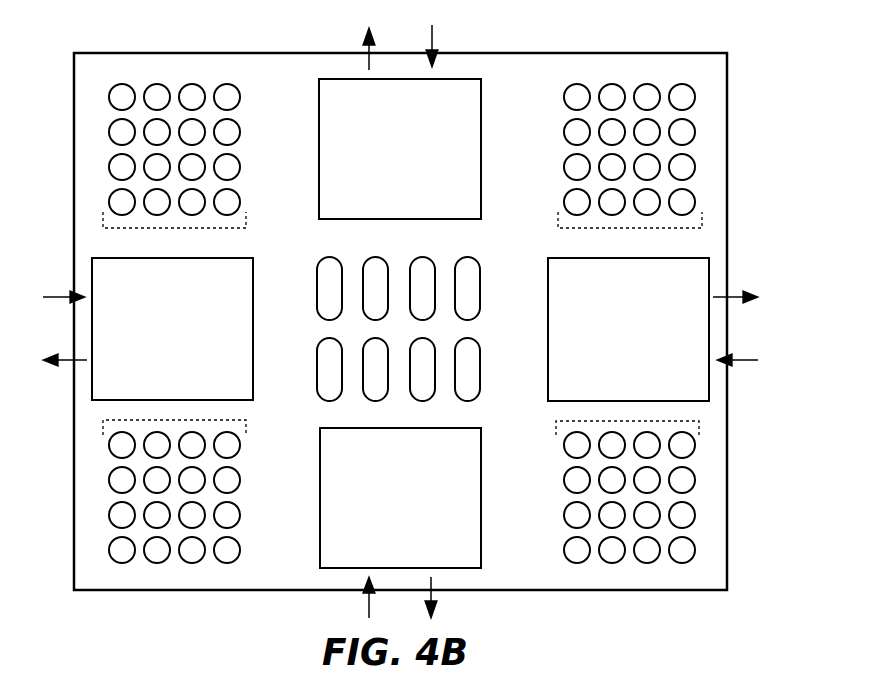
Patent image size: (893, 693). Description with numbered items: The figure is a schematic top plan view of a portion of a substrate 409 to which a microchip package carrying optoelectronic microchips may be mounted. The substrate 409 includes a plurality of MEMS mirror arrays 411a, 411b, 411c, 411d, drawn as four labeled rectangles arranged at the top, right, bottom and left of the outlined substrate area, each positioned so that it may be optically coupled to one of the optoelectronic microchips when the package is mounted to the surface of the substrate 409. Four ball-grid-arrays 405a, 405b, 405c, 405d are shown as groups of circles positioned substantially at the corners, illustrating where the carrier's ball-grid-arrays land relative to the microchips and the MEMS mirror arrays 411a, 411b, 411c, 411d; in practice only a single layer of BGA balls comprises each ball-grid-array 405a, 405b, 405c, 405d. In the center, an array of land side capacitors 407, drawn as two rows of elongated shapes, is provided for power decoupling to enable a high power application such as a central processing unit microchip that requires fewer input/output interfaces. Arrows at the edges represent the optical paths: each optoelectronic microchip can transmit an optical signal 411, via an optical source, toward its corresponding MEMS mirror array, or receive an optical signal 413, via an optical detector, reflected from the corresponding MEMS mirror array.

The ball-grid-array 405a is at (234, 227).
The ball-grid-array 405b is at (558, 227).
The ball-grid-array 405c is at (556, 421).
The ball-grid-array 405d is at (236, 420).
The array of land side capacitors 407 is at (480, 292).
The substrate 409 is at (730, 327).
The optical signal 411 is at (367, 63).
The optical signal 413 is at (434, 66).
The MEMS mirror array 411a is at (400, 149).
The MEMS mirror array 411b is at (628, 329).
The MEMS mirror array 411c is at (400, 498).
The MEMS mirror array 411d is at (172, 329).